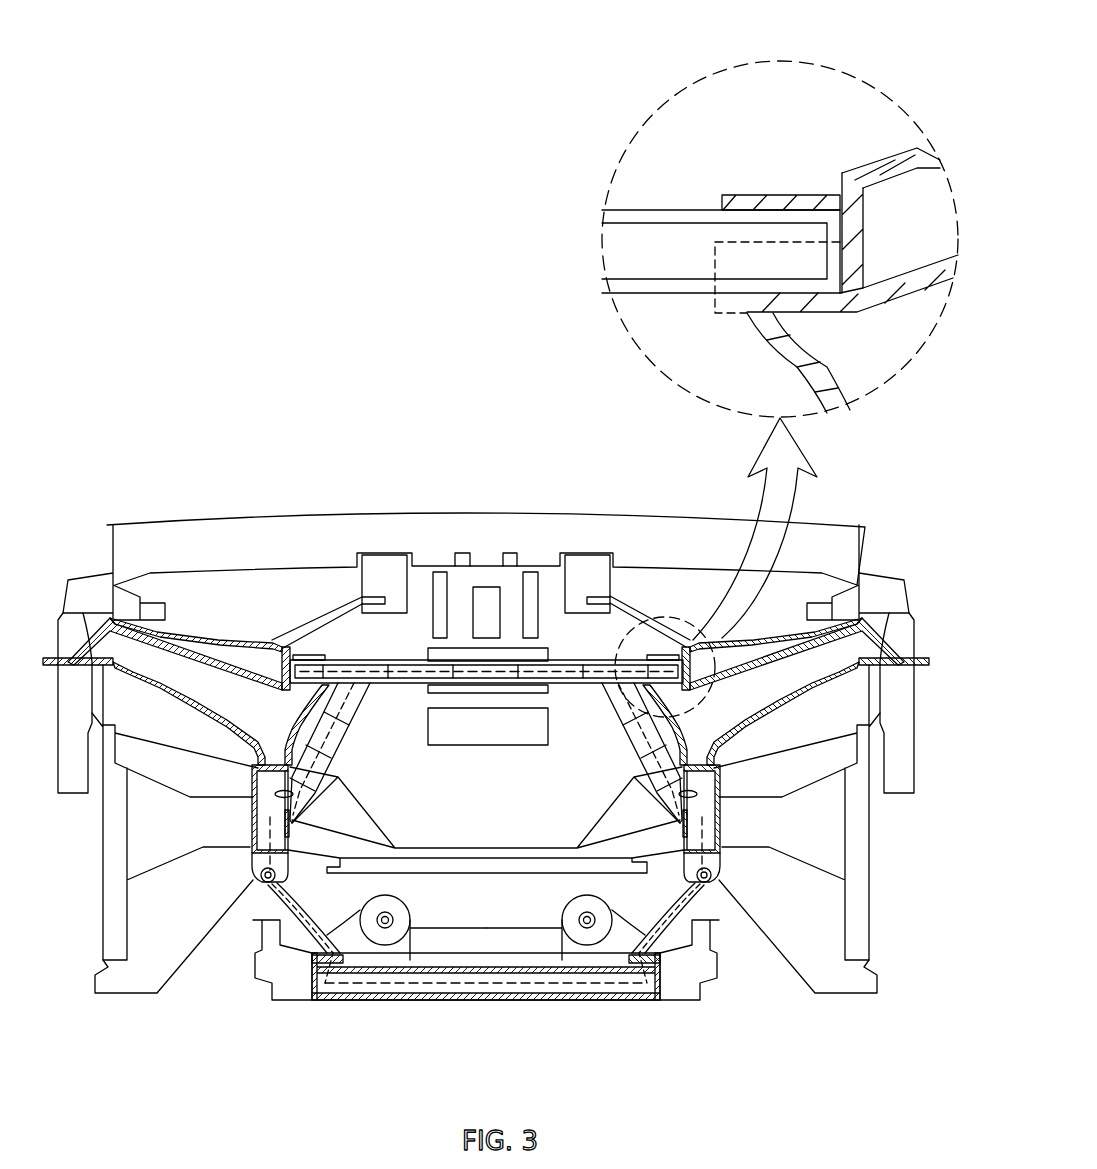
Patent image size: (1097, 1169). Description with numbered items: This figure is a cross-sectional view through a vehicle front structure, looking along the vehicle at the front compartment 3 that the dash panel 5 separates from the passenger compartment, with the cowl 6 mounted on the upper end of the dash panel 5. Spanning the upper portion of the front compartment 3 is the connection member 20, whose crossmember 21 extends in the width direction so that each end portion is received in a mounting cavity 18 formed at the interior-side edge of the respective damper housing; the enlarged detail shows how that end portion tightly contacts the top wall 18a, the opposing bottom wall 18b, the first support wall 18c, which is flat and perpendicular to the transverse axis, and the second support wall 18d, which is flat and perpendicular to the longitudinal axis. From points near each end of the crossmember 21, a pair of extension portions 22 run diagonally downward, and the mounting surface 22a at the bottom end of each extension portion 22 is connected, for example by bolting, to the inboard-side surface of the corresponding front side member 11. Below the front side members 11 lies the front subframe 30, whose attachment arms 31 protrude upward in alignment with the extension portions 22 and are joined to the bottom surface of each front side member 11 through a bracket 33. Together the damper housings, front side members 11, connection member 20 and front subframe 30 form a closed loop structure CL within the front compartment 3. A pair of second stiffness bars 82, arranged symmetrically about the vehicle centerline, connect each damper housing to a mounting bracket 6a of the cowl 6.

The front compartment 3 is at (474, 795).
The dash panel 5 is at (440, 572).
The cowl 6 is at (520, 522).
The mounting bracket 6a is at (385, 567).
The front side member 11 is at (251, 812).
The mounting cavity 18 is at (309, 640).
The top wall 18a is at (735, 193).
The bottom wall 18b is at (772, 285).
The first support wall 18c is at (840, 263).
The second support wall 18d is at (715, 258).
The connection member 20 is at (501, 643).
The crossmember 21 is at (461, 660).
The extension portion 22 is at (350, 735).
The mounting surface 22a is at (290, 817).
The front subframe 30 is at (370, 1024).
The attachment arm 31 is at (284, 890).
The bracket 33 is at (646, 858).
The second stiffness bar 82 is at (308, 627).
The closed loop structure CL is at (272, 820).